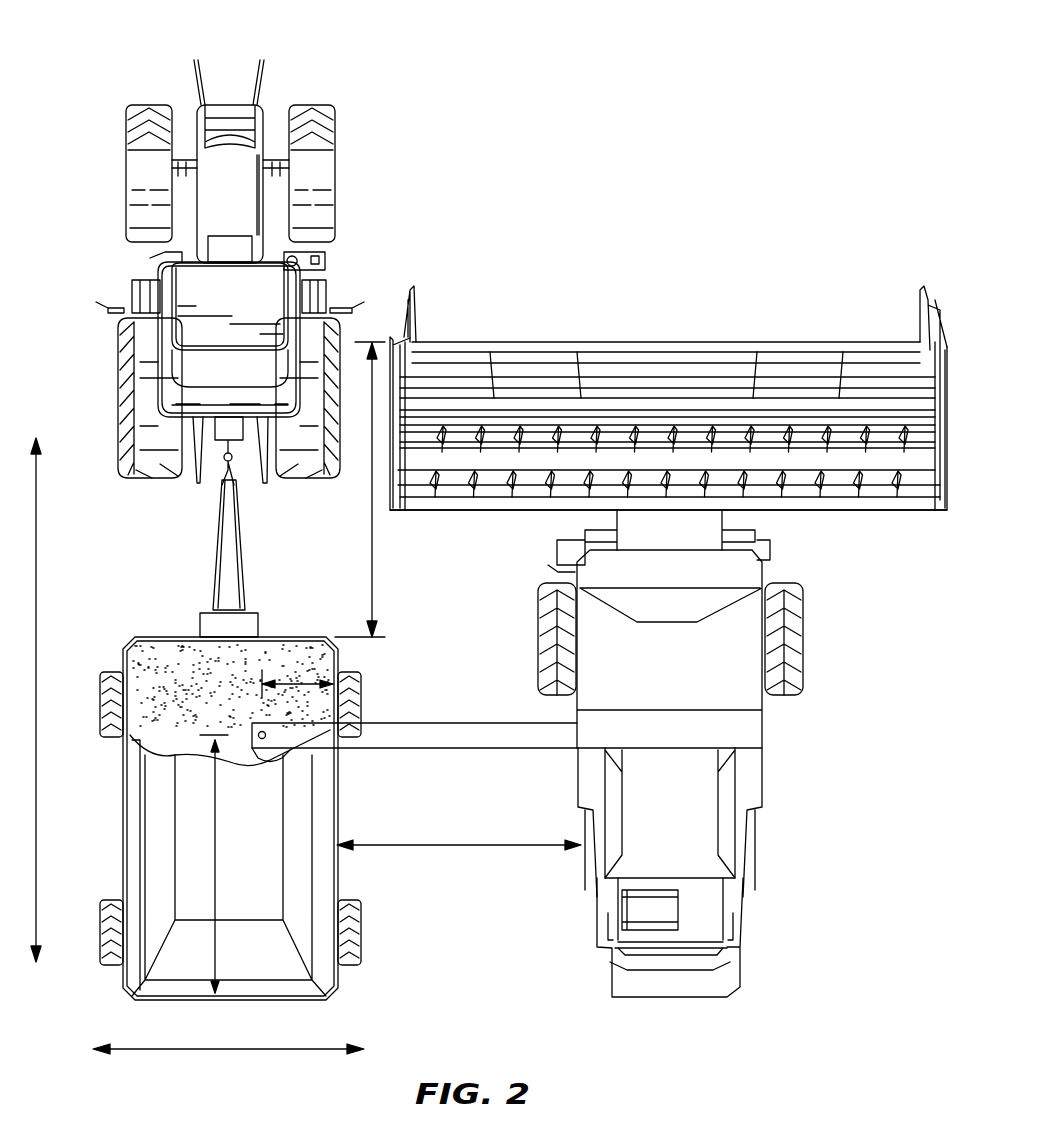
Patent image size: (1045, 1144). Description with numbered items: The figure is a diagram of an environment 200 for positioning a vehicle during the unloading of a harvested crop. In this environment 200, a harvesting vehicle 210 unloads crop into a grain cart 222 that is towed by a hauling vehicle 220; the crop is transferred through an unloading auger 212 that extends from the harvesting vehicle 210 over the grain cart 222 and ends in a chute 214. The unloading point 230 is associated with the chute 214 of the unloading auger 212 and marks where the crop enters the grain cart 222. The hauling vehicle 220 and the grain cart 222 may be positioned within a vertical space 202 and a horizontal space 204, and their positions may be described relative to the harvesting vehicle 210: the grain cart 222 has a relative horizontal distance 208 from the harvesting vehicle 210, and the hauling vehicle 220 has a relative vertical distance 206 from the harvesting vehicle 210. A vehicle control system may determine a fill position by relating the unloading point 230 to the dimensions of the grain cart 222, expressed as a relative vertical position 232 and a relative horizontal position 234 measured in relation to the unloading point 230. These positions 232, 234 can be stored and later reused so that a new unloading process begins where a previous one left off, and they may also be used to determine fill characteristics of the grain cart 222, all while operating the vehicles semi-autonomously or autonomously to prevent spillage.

The environment 200 is at (580, 180).
The vertical space 202 is at (37, 640).
The horizontal space 204 is at (225, 1050).
The relative vertical distance 206 is at (372, 530).
The relative horizontal distance 208 is at (450, 848).
The harvesting vehicle 210 is at (668, 557).
The unloading auger 212 is at (440, 733).
The chute 214 is at (258, 750).
The hauling vehicle 220 is at (220, 203).
The grain cart 222 is at (165, 650).
The unloading point 230 is at (268, 737).
The relative vertical position 232 is at (217, 885).
The relative horizontal position 234 is at (285, 690).